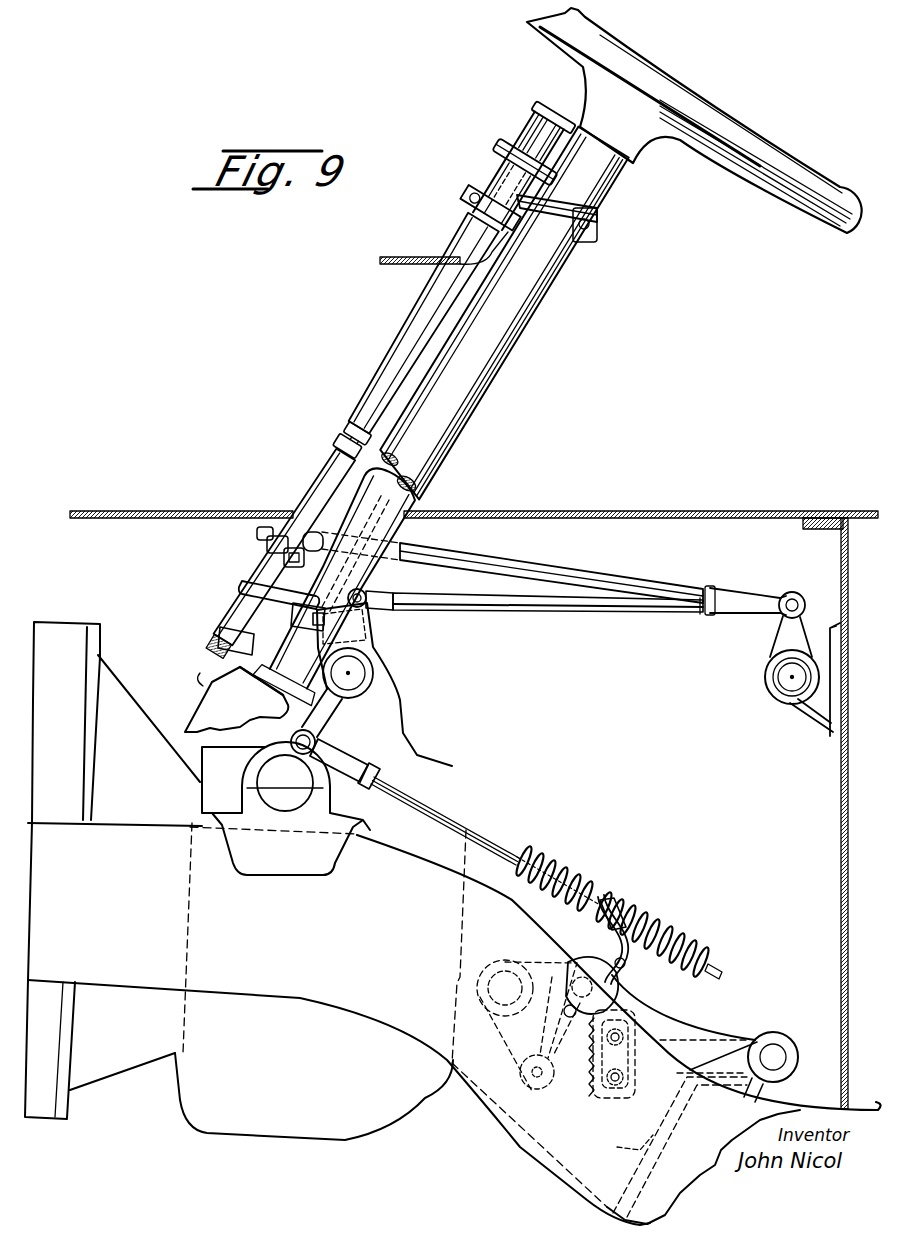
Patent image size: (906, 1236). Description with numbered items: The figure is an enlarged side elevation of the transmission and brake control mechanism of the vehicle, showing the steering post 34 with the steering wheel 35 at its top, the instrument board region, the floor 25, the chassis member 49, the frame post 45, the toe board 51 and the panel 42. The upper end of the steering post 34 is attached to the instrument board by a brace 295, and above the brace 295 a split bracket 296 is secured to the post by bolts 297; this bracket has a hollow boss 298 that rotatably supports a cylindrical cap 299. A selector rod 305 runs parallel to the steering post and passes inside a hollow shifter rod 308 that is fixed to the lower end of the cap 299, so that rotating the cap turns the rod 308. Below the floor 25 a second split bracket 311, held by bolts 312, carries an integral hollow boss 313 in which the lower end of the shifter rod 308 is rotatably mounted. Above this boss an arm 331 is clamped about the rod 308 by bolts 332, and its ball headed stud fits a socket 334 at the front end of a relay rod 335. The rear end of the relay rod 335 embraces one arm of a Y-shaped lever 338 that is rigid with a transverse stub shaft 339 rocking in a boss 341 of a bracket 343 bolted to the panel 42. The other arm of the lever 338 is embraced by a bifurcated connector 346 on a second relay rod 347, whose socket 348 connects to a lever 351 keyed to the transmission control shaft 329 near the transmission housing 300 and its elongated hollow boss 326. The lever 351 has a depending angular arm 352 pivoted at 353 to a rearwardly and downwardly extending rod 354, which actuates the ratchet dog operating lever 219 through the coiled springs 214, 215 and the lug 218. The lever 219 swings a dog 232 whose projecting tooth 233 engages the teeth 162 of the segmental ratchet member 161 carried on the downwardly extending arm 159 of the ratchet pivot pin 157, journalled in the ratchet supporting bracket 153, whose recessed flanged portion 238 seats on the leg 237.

The floor 25 is at (690, 511).
The steering post 34 is at (522, 322).
The steering wheel 35 is at (717, 116).
The panel 42 is at (840, 871).
The frame post 45 is at (122, 705).
The chassis member 49 is at (143, 824).
The toe board 51 is at (770, 1107).
The ratchet supporting bracket 153 is at (520, 1140).
The ratchet pivot pin 157 is at (773, 1058).
The downwardly extending arm 159 is at (700, 1040).
The segmental ratchet member 161 is at (640, 1010).
The teeth 162 is at (593, 1083).
The coiled compression spring 214 is at (607, 887).
The coiled spring 215 is at (703, 945).
The lug 218 is at (627, 899).
The ratchet dog operating lever 219 is at (623, 982).
The dog 232 is at (605, 962).
The projecting tooth 233 is at (625, 964).
The leg 237 is at (673, 1130).
The recessed flanged portion 238 is at (625, 1141).
The brace 295 is at (402, 257).
The split bracket 296 is at (600, 220).
The bolts 297 is at (597, 233).
The hollow boss 298 is at (486, 168).
The cylindrical cap 299 is at (549, 121).
The transmission housing 300 is at (457, 767).
The selector rod 305 is at (350, 432).
The hollow shifter rod 308 is at (380, 393).
The split bracket 311 is at (316, 575).
The bolts 312 is at (283, 633).
The hollow boss 313 is at (247, 582).
The elongated hollow boss 326 is at (743, 592).
The transmission control shaft 329 is at (350, 675).
The arm 331 is at (284, 560).
The bolts 332 is at (267, 544).
The socket 334 is at (257, 532).
The relay rod 335 is at (527, 563).
The Y-shaped lever 338 is at (773, 651).
The transverse stub shaft 339 is at (792, 680).
The boss 341 is at (787, 707).
The bracket 343 is at (827, 727).
The bifurcated connector 346 is at (733, 617).
The second relay rod 347 is at (600, 607).
The socket 348 is at (364, 596).
The lever 351 is at (353, 630).
The angular arm 352 is at (340, 710).
The pivot connection 353 is at (296, 741).
The rod 354 is at (503, 852).